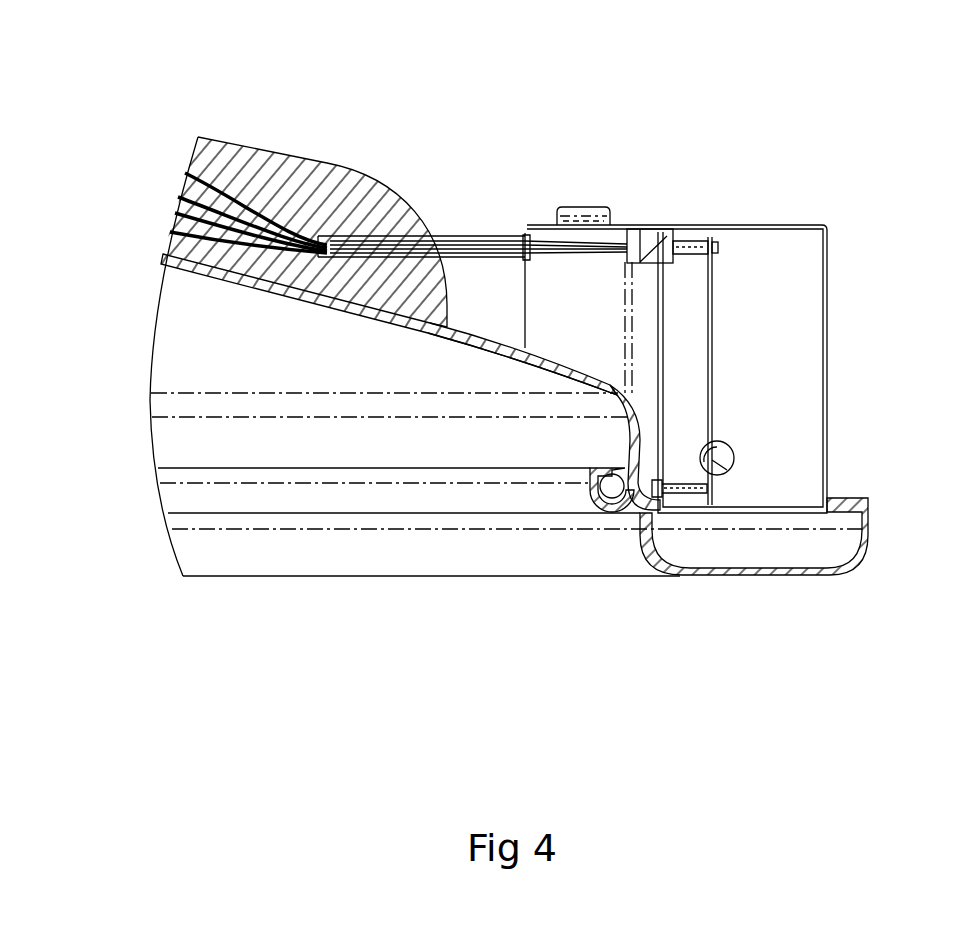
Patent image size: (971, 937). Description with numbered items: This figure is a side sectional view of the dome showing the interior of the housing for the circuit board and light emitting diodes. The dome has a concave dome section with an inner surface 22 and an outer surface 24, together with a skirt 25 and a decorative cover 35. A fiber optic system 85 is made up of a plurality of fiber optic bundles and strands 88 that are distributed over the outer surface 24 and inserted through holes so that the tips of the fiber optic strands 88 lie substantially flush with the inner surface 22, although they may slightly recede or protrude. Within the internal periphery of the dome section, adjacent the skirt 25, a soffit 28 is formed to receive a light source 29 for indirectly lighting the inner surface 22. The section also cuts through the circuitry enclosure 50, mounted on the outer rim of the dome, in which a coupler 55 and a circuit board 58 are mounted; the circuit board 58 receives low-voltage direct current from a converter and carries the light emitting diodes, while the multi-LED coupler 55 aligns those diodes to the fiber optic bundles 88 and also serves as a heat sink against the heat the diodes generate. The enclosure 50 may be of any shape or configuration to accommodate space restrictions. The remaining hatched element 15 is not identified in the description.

The potting body 15 is at (343, 170).
The inner surface 22 is at (278, 288).
The outer surface 24 is at (482, 337).
The skirt 25 is at (637, 455).
The soffit 28 is at (553, 498).
The light source 29 is at (612, 492).
The decorative cover 35 is at (862, 555).
The circuitry enclosure 50 is at (828, 225).
The coupler 55 is at (655, 247).
The circuit board 58 is at (712, 345).
The fiber optic system 85 is at (502, 238).
The fiber optic strands 88 is at (172, 230).